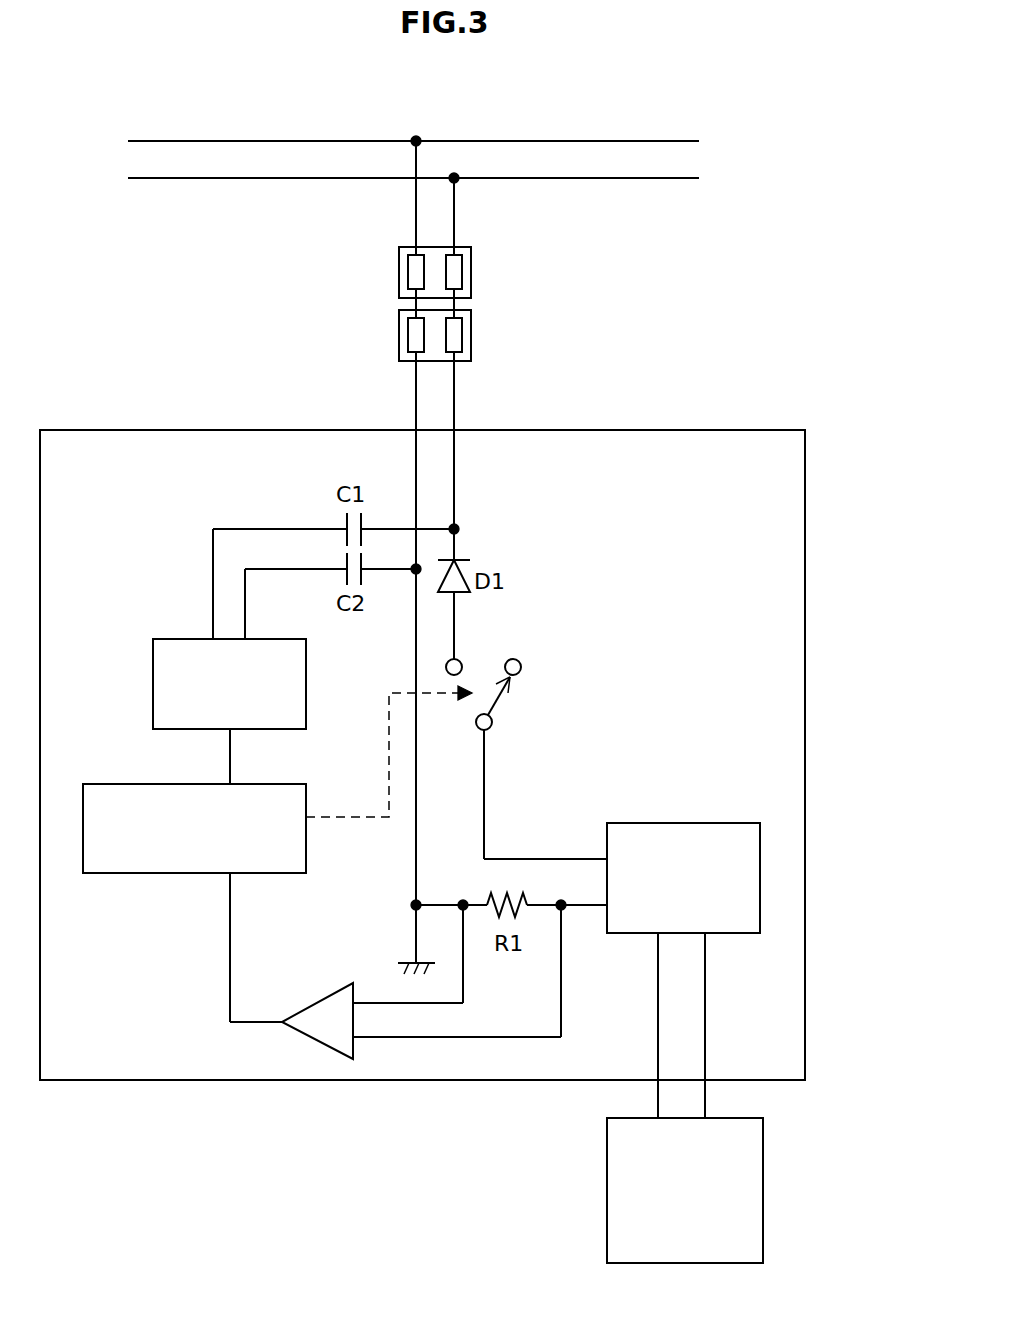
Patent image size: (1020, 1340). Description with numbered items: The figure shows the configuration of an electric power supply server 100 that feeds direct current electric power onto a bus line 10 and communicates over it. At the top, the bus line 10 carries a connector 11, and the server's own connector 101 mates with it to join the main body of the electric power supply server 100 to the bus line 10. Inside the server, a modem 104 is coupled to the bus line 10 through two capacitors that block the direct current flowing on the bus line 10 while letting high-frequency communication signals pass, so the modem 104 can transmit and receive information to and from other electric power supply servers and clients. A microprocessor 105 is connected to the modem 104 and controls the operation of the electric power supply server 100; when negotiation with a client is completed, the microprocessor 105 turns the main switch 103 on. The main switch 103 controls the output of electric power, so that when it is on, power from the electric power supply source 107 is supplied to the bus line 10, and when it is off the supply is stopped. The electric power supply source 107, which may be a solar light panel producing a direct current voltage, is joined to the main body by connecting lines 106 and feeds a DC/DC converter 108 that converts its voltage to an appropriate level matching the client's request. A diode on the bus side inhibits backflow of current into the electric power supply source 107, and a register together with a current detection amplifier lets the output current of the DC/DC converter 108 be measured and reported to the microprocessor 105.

The bus line 10 is at (110, 131).
The connector 11 is at (471, 272).
The electric power supply server 100 is at (724, 392).
The connector 101 is at (471, 332).
The main switch 103 is at (496, 702).
The modem 104 is at (190, 639).
The microprocessor 105 is at (176, 874).
The connecting lines 106 is at (320, 998).
The electric power supply source 107 is at (765, 1172).
The DC/DC converter 108 is at (686, 823).